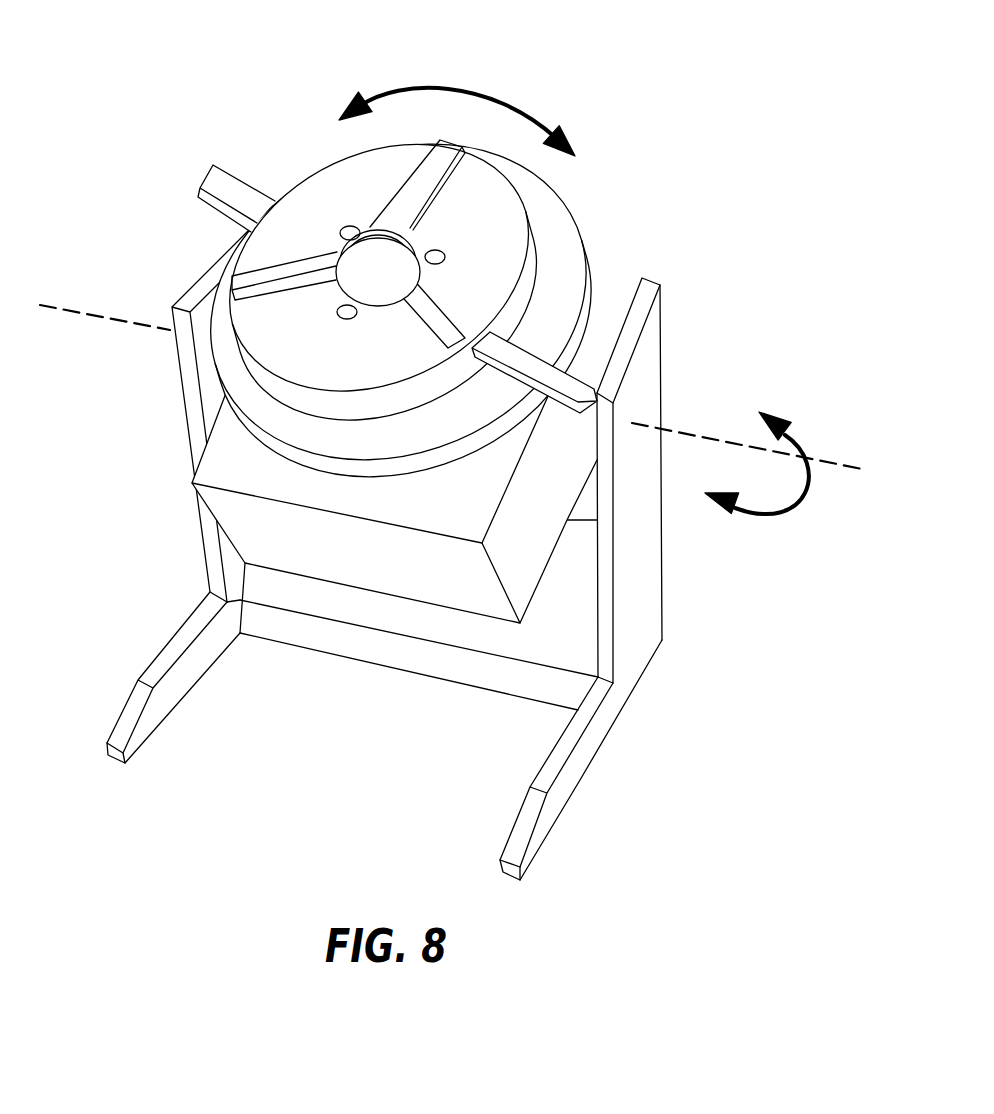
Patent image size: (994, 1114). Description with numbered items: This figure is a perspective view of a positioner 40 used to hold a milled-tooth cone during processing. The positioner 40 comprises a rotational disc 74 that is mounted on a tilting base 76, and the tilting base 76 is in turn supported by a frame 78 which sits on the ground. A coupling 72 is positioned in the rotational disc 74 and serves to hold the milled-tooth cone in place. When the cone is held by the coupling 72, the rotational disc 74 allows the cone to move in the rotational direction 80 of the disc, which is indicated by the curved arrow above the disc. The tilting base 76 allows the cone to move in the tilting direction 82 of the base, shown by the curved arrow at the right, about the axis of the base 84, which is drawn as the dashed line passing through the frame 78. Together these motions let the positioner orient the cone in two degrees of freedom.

The tilt-rotate positioner assembly 40 is at (469, 445).
The coupling 72 is at (383, 262).
The rotational disc 74 is at (352, 367).
The tilting base 76 is at (350, 566).
The frame 78 is at (640, 568).
The rotational direction 80 is at (471, 90).
The tilting direction 82 is at (805, 505).
The axis of the base 84 is at (722, 440).